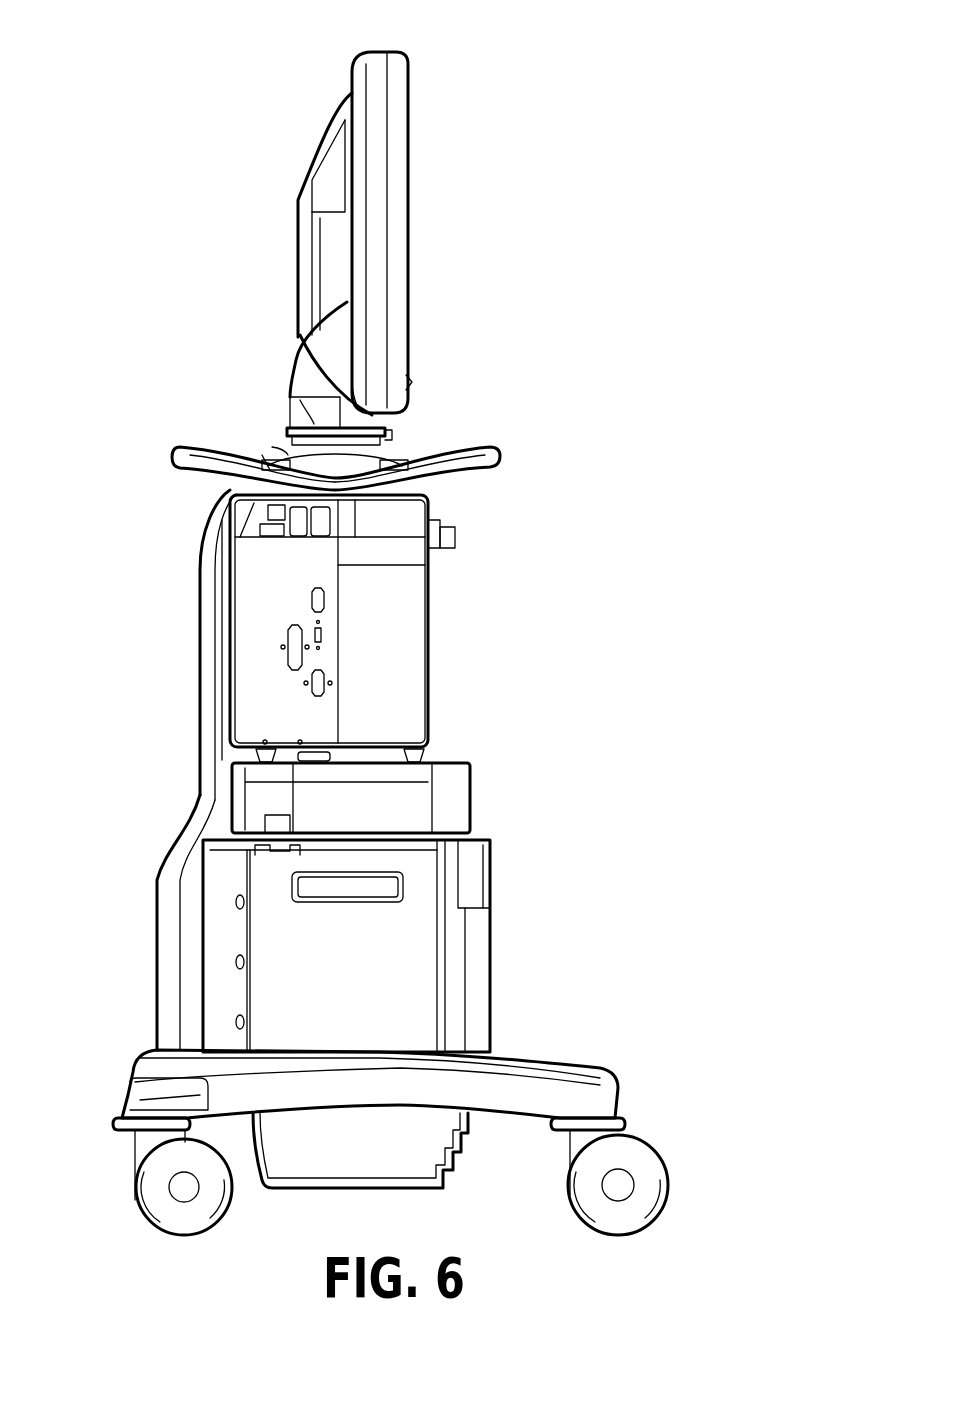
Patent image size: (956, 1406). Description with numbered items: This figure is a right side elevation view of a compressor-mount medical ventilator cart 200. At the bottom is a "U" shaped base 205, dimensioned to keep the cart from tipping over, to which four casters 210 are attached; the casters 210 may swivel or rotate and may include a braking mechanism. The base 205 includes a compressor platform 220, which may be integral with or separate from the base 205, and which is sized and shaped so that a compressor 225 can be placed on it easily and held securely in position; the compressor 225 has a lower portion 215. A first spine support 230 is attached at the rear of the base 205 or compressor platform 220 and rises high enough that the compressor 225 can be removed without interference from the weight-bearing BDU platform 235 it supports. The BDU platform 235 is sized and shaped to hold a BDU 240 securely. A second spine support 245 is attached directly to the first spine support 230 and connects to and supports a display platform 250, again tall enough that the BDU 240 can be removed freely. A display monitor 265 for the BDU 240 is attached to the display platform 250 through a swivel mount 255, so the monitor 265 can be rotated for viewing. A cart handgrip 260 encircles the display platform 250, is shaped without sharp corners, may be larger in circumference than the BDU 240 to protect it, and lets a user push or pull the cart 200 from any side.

The compressor-mount medical ventilator cart 200 is at (809, 158).
The "U" shaped base 205 is at (560, 1100).
The casters 210 is at (150, 1200).
The lower portion 215 is at (398, 1190).
The compressor platform 220 is at (208, 1053).
The compressor 225 is at (418, 1003).
The first spine support 230 is at (160, 885).
The BDU platform 235 is at (405, 773).
The BDU 240 is at (397, 637).
The second spine support 245 is at (207, 637).
The display platform 250 is at (268, 447).
The swivel mount 255 is at (314, 422).
The cart handgrip 260 is at (497, 451).
The display monitor 265 is at (403, 127).